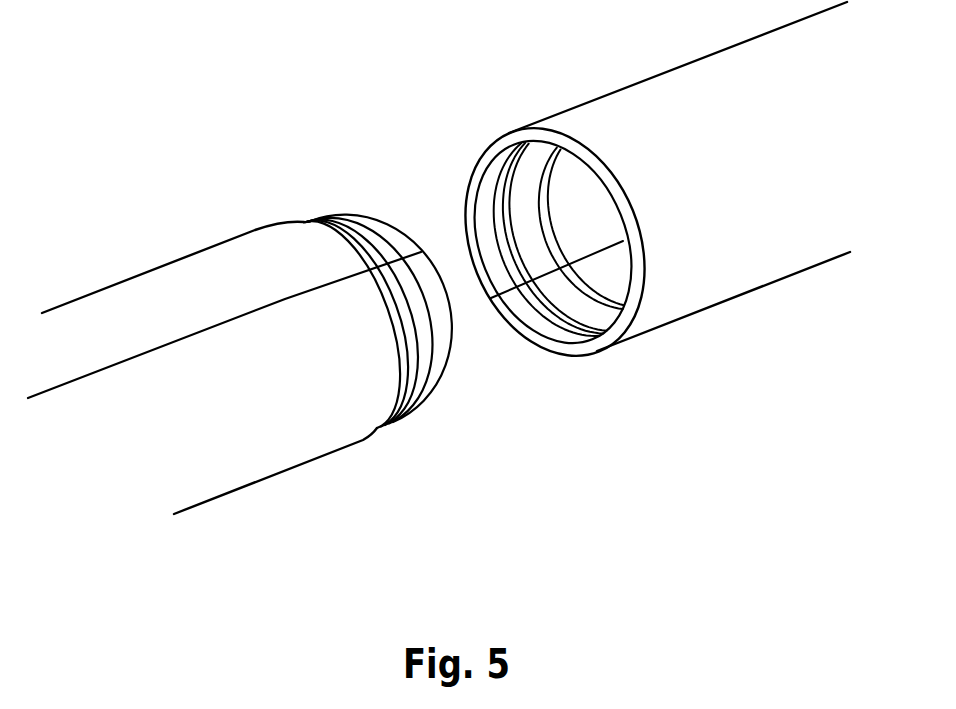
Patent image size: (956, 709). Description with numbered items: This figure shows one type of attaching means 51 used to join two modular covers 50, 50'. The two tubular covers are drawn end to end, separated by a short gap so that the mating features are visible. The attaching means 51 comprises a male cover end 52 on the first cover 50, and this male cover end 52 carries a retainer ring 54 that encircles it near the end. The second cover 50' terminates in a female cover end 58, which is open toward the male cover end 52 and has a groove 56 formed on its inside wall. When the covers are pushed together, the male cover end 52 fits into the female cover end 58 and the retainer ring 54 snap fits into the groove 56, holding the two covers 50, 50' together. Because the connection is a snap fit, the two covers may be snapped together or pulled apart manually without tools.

The modular cover 50 is at (224, 364).
The modular cover 50' is at (641, 192).
The attaching means 51 is at (266, 74).
The male cover end 52 is at (395, 232).
The retainer ring 54 is at (338, 222).
The groove 56 is at (498, 217).
The female cover end 58 is at (523, 313).